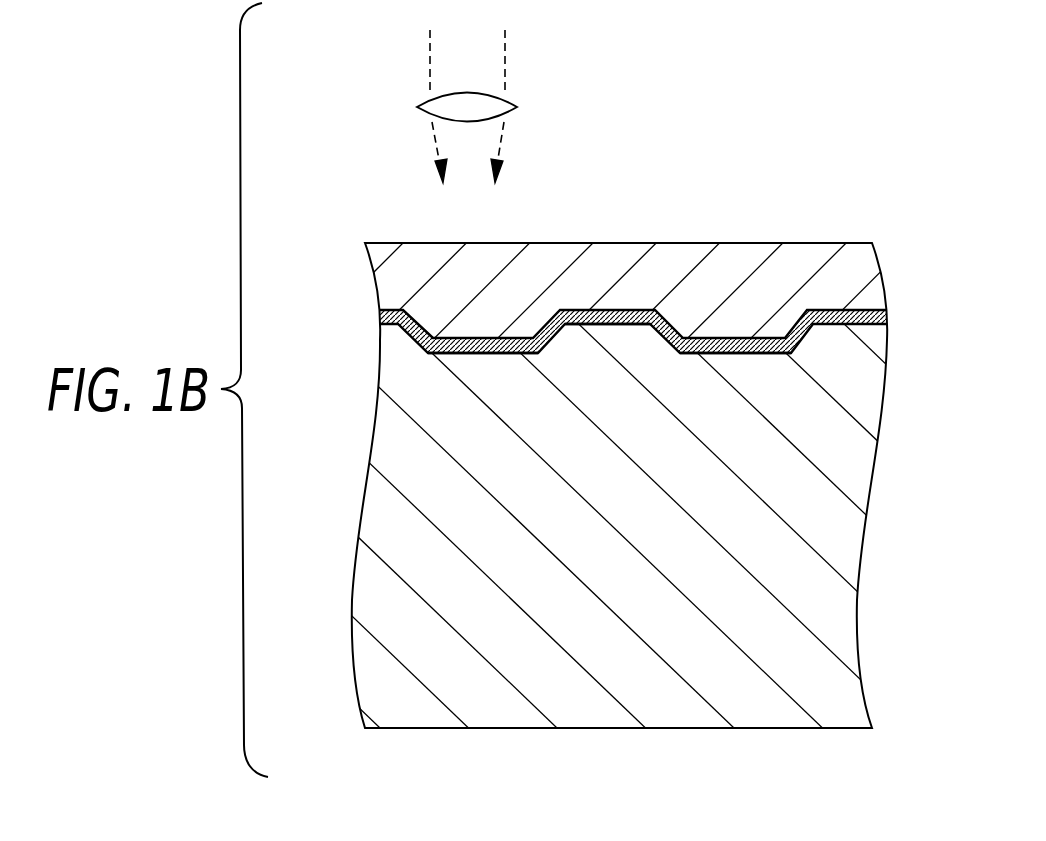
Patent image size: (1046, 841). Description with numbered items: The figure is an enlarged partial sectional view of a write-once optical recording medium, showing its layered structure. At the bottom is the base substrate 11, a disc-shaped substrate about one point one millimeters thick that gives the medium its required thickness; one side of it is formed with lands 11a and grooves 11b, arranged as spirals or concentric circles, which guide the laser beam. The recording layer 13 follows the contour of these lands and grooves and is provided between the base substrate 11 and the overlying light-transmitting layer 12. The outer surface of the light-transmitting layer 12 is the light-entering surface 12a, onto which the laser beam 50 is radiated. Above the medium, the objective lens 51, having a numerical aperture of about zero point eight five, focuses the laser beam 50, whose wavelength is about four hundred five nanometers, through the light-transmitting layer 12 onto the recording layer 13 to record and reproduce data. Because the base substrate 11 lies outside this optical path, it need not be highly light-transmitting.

The base substrate 11 is at (862, 473).
The land 11a is at (481, 354).
The groove 11b is at (603, 324).
The light-transmitting layer 12 is at (870, 266).
The light-entering surface 12a is at (755, 243).
The recording layer 13 is at (883, 314).
The laser beam 50 is at (505, 130).
The objective lens 51 is at (513, 98).